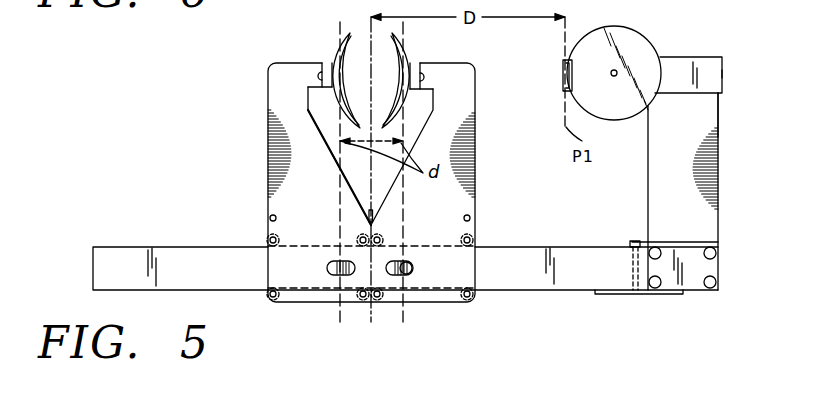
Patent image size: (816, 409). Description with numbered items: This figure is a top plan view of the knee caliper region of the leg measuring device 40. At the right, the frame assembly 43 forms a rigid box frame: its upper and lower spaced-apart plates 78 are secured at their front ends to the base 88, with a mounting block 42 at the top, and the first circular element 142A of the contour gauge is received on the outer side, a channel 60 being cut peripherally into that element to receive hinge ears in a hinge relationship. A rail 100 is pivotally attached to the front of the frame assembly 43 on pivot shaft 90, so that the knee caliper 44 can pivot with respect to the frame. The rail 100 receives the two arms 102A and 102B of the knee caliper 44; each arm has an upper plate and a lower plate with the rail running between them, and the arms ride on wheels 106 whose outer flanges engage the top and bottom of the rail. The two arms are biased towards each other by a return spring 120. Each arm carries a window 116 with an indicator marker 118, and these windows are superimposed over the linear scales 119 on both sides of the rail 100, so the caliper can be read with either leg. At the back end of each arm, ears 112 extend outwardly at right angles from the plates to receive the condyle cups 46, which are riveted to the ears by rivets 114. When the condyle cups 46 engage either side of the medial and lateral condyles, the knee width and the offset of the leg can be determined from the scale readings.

The work holding fixture 40 is at (208, 117).
The condyle cups 46 is at (339, 46).
The ears 112 is at (430, 63).
The rivets 114 is at (424, 78).
The knee caliper 44 is at (448, 217).
The return spring 120 is at (367, 213).
The arm 102A is at (477, 180).
The arm 102B is at (268, 193).
The wheels 106 is at (290, 278).
The window 116 is at (338, 276).
The indicator marker 118 is at (408, 275).
The scales 119 is at (413, 267).
The rail 100 is at (570, 290).
The frame assembly 43 is at (718, 208).
The plates 78 is at (720, 137).
The mounting block 42 is at (707, 57).
The first circular element 142A is at (628, 28).
The channel 60 is at (577, 63).
The base 88 is at (718, 265).
The pivot shaft 90 is at (635, 294).